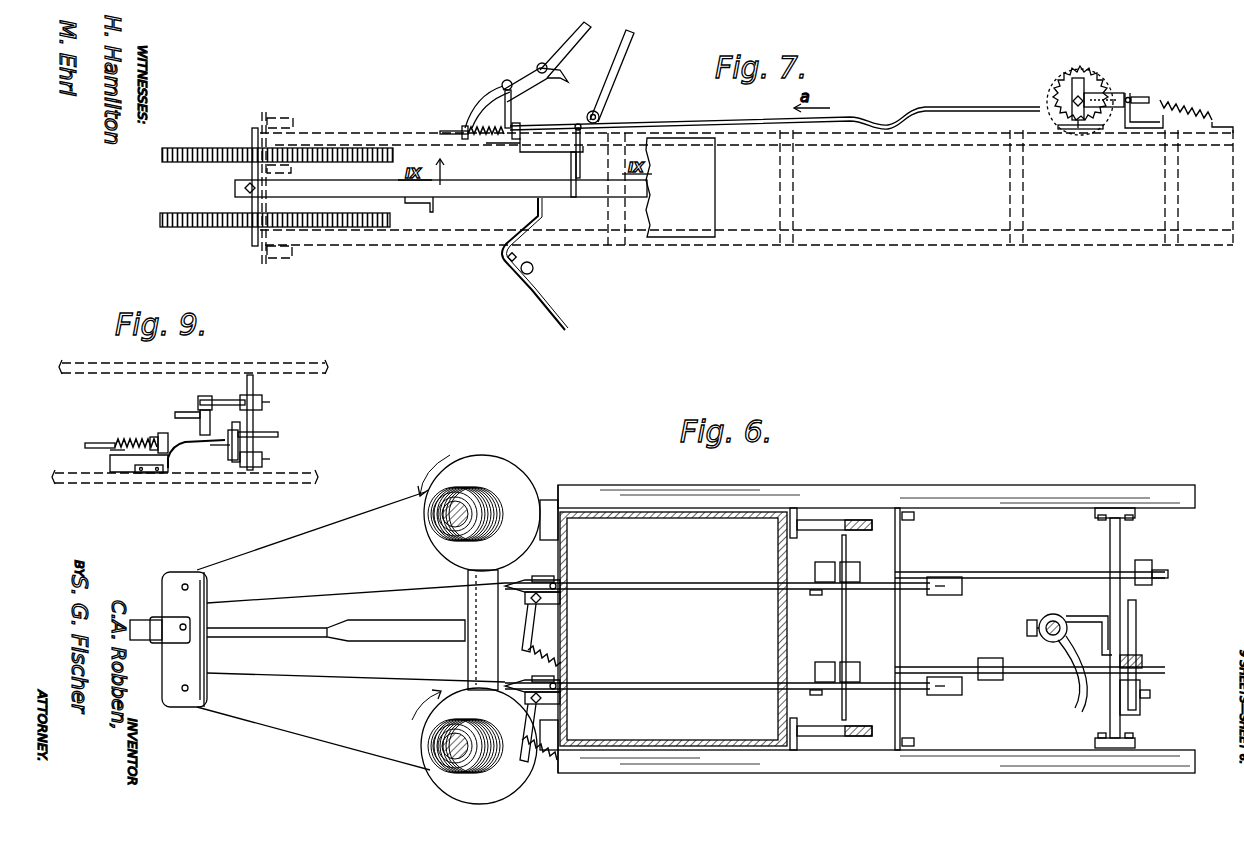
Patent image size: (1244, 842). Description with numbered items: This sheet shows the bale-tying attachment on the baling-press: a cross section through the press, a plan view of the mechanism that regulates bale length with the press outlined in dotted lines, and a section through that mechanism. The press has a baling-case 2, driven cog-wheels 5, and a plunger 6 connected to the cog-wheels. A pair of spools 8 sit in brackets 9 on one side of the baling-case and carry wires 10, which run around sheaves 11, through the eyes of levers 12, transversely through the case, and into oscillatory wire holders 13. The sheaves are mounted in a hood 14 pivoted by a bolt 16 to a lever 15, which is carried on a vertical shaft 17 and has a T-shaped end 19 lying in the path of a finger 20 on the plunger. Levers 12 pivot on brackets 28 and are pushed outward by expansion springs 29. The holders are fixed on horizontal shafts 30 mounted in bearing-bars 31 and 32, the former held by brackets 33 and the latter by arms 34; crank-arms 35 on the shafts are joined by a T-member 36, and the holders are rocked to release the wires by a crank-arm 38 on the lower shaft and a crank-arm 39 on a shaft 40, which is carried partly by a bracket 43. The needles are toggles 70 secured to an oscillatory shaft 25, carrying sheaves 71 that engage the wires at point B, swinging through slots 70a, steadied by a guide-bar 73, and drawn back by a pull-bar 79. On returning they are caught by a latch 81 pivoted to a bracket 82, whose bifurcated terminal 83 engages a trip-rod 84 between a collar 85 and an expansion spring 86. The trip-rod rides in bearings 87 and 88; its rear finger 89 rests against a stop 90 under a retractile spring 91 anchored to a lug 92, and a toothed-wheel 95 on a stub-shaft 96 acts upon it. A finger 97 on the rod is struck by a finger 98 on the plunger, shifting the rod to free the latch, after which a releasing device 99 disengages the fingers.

In FIG. 7, the baling-case 2 is at (850, 246).
In FIG. 9, the baling-case 2 is at (292, 362).
In FIG. 6, the baling-case 2 is at (668, 512).
In FIG. 7, the driven cog-wheels 5 is at (195, 160).
In FIG. 7, the plunger 6 is at (662, 195).
In FIG. 6, the spools 8 is at (478, 460).
In FIG. 6, the brackets 9 is at (548, 500).
In FIG. 6, the wires 10 is at (360, 540).
In FIG. 6, the sheaves 11 is at (207, 588).
In FIG. 6, the levers 12 is at (532, 640).
In FIG. 6, the oscillatory wire holders 13 is at (830, 595).
In FIG. 6, the hood 14 is at (165, 578).
In FIG. 7, the lever 15 is at (566, 330).
In FIG. 6, the lever 15 is at (332, 634).
In FIG. 7, the bolt 16 is at (1010, 182).
In FIG. 6, the bolt 16 is at (138, 620).
In FIG. 7, the vertical shaft 17 is at (532, 270).
In FIG. 7, the T-shaped end 19 is at (545, 225).
In FIG. 7, the finger 20 is at (433, 215).
In FIG. 7, the oscillatory shaft 25 is at (600, 113).
In FIG. 9, the oscillatory shaft 25 is at (255, 385).
In FIG. 6, the brackets 28 is at (560, 600).
In FIG. 6, the expansion springs 29 is at (565, 652).
In FIG. 6, the horizontal shafts 30 is at (1000, 580).
In FIG. 6, the bearing-bar 31 is at (846, 620).
In FIG. 6, the bearing-bar 32 is at (1122, 540).
In FIG. 6, the brackets 33 is at (826, 520).
In FIG. 7, the arms 34 is at (832, 182).
In FIG. 6, the arms 34 is at (1008, 485).
In FIG. 6, the crank-arms 35 is at (1150, 598).
In FIG. 6, the T-member 36 is at (1137, 645).
In FIG. 6, the crank-arm 38 is at (985, 680).
In FIG. 6, the crank-arm 39 is at (1078, 708).
In FIG. 6, the shaft 40 is at (1053, 614).
In FIG. 6, the bracket 43 is at (1088, 622).
In FIG. 7, the toggles 70 is at (620, 52).
In FIG. 9, the toggles 70 is at (250, 445).
In FIG. 6, the toggles 70 is at (700, 592).
In FIG. 6, the slots 70a is at (560, 577).
In FIG. 6, the sheaves 71 is at (540, 575).
In FIG. 6, the guide-bar 73 is at (900, 630).
In FIG. 9, the pull-bar 79 is at (180, 412).
In FIG. 7, the latch 81 is at (512, 105).
In FIG. 7, the bracket 82 is at (478, 100).
In FIG. 9, the bracket 82 is at (140, 475).
In FIG. 7, the bifurcated terminal 83 is at (510, 145).
In FIG. 9, the bifurcated terminal 83 is at (152, 438).
In FIG. 7, the trip-rod 84 is at (742, 122).
In FIG. 9, the trip-rod 84 is at (280, 434).
In FIG. 7, the collar 85 is at (518, 130).
In FIG. 9, the collar 85 is at (163, 432).
In FIG. 7, the expansion spring 86 is at (478, 138).
In FIG. 9, the expansion spring 86 is at (118, 438).
In FIG. 7, the bearing 87 is at (462, 128).
In FIG. 9, the bearing 87 is at (112, 444).
In FIG. 7, the bearing 88 is at (1128, 95).
In FIG. 7, the finger 89 is at (1140, 96).
In FIG. 7, the stop 90 is at (1145, 130).
In FIG. 7, the retractile spring 91 is at (1195, 112).
In FIG. 7, the lug 92 is at (1218, 130).
In FIG. 7, the bale-actuated toothed-wheel 95 is at (1062, 84).
In FIG. 7, the stub-shaft 96 is at (1085, 92).
In FIG. 7, the finger 97 is at (570, 156).
In FIG. 9, the finger 97 is at (230, 460).
In FIG. 7, the finger 98 is at (576, 178).
In FIG. 9, the finger 98 is at (238, 462).
In FIG. 7, the releasing device 99 is at (535, 156).
In FIG. 9, the releasing device 99 is at (180, 470).
In FIG. 6, the point B is at (560, 585).